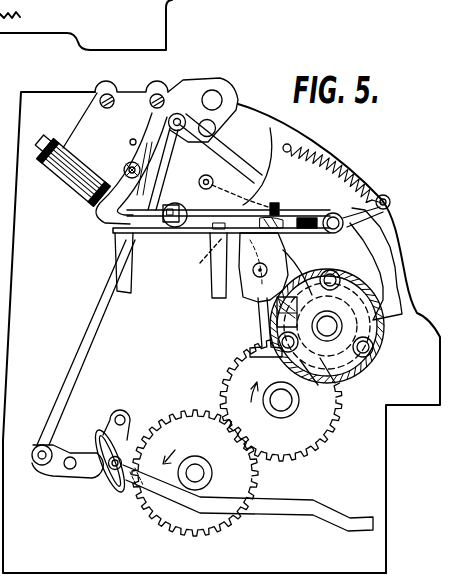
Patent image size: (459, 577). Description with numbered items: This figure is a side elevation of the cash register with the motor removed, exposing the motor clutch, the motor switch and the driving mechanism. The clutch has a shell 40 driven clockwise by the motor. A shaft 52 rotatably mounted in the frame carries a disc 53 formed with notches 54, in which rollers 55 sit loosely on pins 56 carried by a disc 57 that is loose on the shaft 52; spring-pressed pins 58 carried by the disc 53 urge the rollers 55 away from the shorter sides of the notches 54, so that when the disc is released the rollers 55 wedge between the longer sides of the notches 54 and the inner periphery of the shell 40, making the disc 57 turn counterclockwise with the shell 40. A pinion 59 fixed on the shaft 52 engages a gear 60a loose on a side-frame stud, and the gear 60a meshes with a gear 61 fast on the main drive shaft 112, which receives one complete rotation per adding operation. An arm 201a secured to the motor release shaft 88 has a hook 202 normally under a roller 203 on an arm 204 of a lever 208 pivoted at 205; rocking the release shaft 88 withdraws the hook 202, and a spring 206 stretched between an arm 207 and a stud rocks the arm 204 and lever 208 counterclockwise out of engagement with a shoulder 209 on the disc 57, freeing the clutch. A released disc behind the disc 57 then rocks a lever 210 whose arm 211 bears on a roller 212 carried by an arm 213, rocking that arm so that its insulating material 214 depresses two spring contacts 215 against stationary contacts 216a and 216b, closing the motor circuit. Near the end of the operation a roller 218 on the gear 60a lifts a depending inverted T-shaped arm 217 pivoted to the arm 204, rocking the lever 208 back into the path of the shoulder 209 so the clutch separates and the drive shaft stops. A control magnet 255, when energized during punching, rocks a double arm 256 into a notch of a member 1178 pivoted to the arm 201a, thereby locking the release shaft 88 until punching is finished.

The shell 40 is at (380, 347).
The shaft 52 is at (327, 326).
The disc 53 is at (343, 373).
The notches 54 is at (246, 372).
The rollers 55 is at (368, 361).
The pins 56 is at (380, 357).
The disc 57 is at (278, 318).
The spring-pressed pins 58 is at (381, 266).
The pinion 59 is at (355, 303).
The gear 60a is at (305, 438).
The gear 61 is at (182, 519).
The motor release shaft 88 is at (212, 125).
The main drive shaft 112 is at (212, 477).
The arm 201a is at (227, 136).
The hook 202 is at (226, 168).
The roller 203 is at (199, 182).
The arm 204 is at (266, 152).
The pivot 205 is at (372, 236).
The spring 206 is at (301, 158).
The arm 207 is at (384, 196).
The lever 208 is at (367, 253).
The shoulder 209 is at (412, 314).
The lever 210 is at (241, 292).
The arm 211 is at (171, 265).
The roller 212 is at (324, 219).
The arm 213 is at (199, 231).
The insulating material 214 is at (273, 203).
The spring contacts 215 is at (325, 215).
The stationary contact 216a is at (336, 206).
The stationary contact 216b is at (336, 206).
The inverted T-shaped arm 217 is at (284, 256).
The roller 218 is at (303, 385).
The control magnet 255 is at (68, 188).
The double arm 256 is at (129, 153).
The member 1178 is at (90, 337).